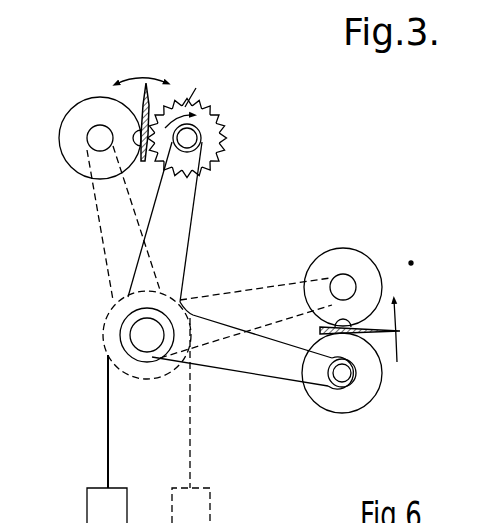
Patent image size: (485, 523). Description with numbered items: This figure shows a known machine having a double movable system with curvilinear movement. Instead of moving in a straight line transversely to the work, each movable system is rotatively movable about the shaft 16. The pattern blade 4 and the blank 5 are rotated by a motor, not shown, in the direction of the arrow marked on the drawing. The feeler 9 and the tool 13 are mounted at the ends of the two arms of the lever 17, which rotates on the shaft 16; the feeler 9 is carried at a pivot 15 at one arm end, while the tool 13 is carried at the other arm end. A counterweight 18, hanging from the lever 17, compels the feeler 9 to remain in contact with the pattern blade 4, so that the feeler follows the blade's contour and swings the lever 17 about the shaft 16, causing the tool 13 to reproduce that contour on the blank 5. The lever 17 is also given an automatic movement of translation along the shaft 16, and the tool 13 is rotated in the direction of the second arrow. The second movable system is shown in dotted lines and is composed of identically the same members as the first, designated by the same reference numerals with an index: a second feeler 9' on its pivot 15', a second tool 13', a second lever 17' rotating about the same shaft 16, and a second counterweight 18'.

The pattern blade 4 is at (386, 328).
The blank 5 is at (143, 102).
The feeler 9 is at (342, 390).
The feeler of second movable system 9' is at (358, 284).
The tool 13 is at (203, 123).
The tool of second movable system 13' is at (100, 198).
The pivot of feeler 15 is at (374, 383).
The pivot of feeler of second movable system 15' is at (347, 260).
The shaft 16 is at (137, 335).
The lever 17 is at (252, 354).
The lever of second movable system 17' is at (246, 307).
The counterweight 18 is at (86, 439).
The counterweight of second movable system 18' is at (213, 420).